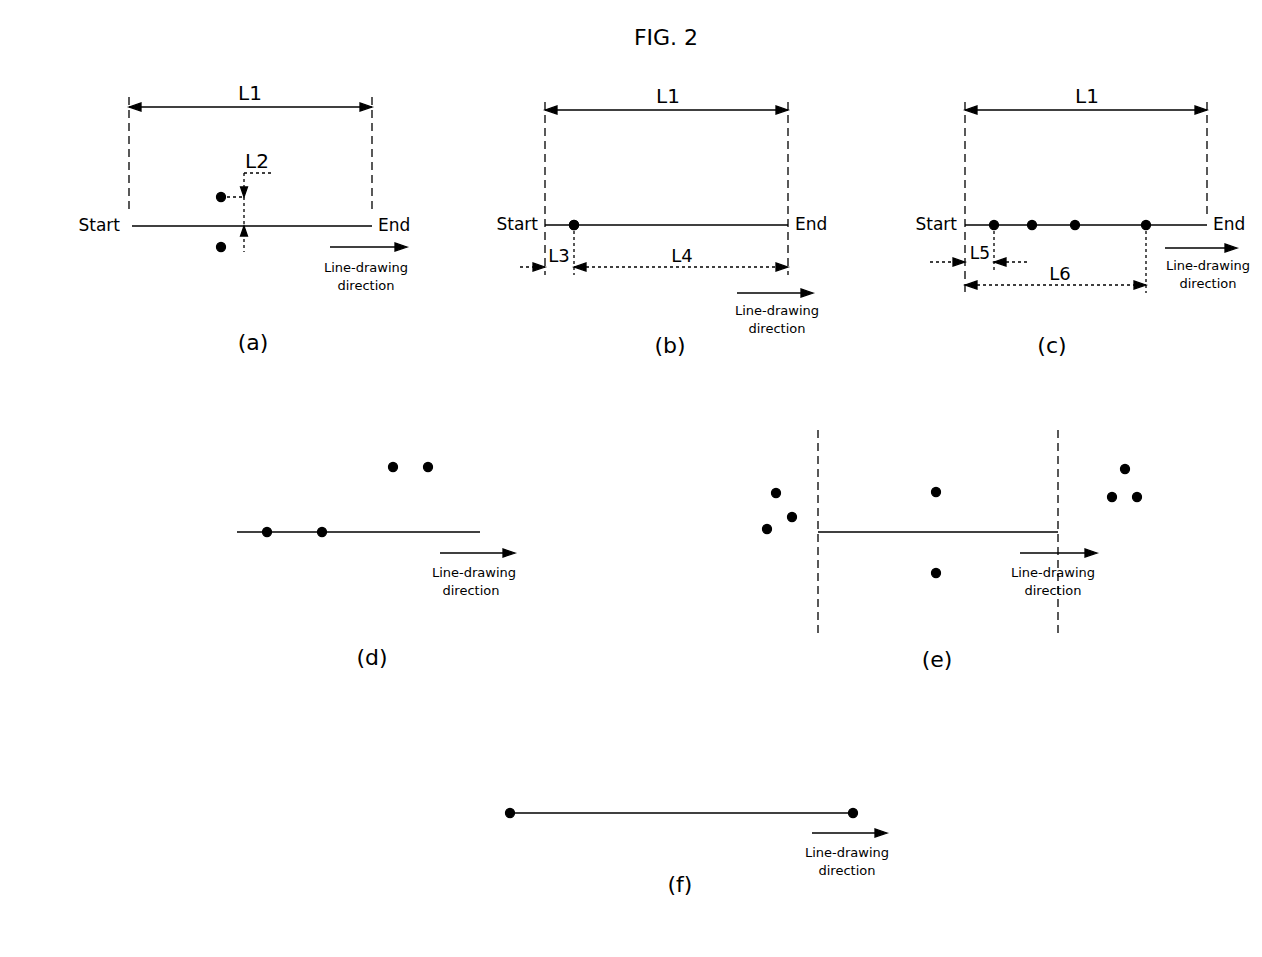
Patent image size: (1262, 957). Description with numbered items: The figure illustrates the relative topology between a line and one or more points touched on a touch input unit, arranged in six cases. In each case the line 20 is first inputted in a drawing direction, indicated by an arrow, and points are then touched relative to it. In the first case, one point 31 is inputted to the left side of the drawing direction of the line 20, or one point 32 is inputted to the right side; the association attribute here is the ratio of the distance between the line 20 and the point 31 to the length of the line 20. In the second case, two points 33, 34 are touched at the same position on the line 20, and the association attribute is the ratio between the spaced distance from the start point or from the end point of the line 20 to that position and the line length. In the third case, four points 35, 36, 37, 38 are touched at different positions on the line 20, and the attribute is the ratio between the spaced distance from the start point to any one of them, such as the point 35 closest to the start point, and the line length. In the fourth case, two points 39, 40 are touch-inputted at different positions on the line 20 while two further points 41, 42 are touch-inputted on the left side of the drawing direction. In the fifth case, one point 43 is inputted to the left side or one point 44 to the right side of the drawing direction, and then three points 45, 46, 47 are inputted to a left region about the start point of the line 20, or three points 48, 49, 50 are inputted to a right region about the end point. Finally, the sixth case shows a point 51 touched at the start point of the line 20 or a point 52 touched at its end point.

The line 20 is at (305, 226).
The point 31 is at (219, 195).
The point 32 is at (220, 250).
The point 33 is at (575, 222).
The point 34 is at (606, 191).
The point 35 is at (994, 222).
The point 36 is at (1032, 222).
The point 37 is at (1075, 222).
The point 38 is at (1146, 222).
The point 39 is at (267, 529).
The point 40 is at (322, 529).
The point 41 is at (393, 464).
The point 42 is at (430, 464).
The point 43 is at (939, 490).
The point 44 is at (938, 576).
The point 45 is at (773, 493).
The point 46 is at (766, 532).
The point 47 is at (792, 520).
The point 48 is at (1124, 466).
The point 49 is at (1114, 500).
The point 50 is at (1139, 500).
The point 51 is at (510, 810).
The point 52 is at (853, 810).